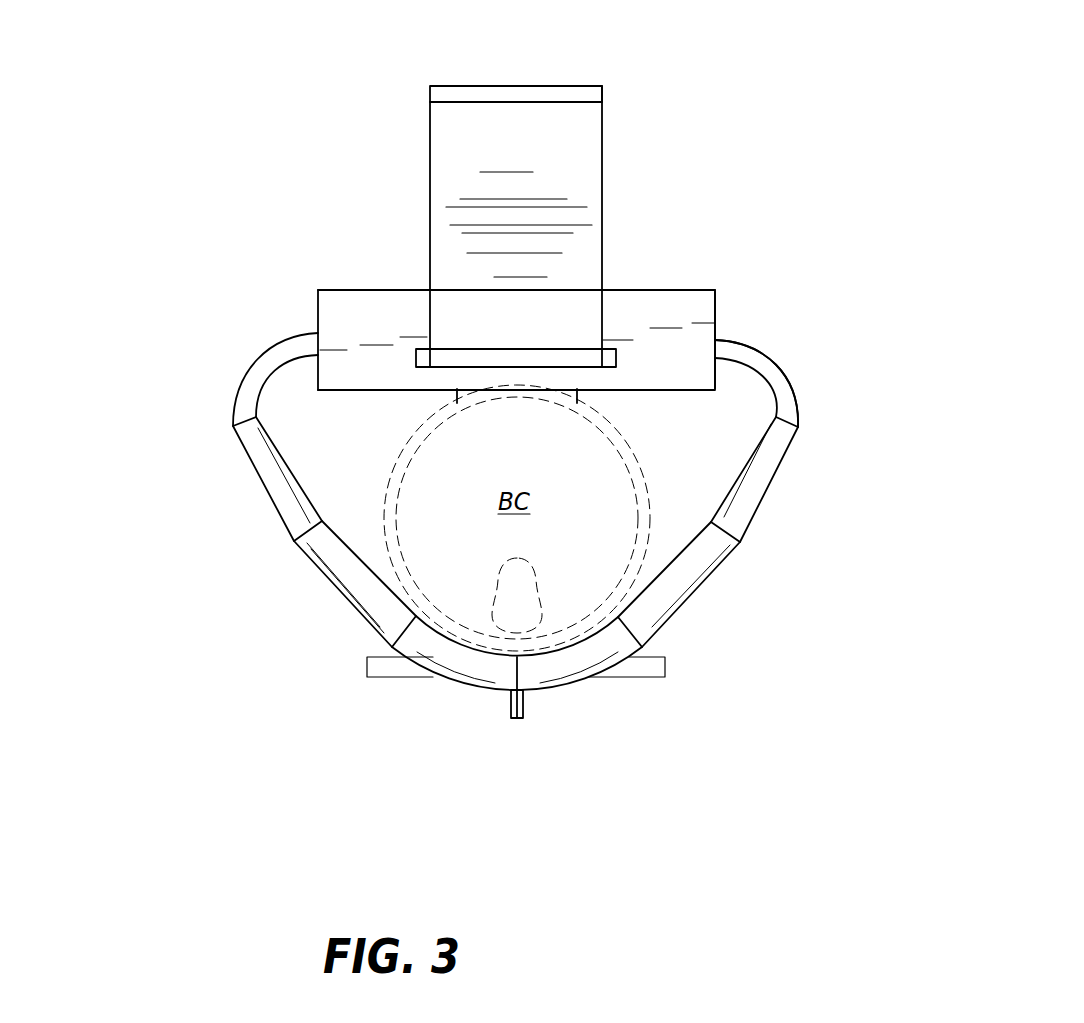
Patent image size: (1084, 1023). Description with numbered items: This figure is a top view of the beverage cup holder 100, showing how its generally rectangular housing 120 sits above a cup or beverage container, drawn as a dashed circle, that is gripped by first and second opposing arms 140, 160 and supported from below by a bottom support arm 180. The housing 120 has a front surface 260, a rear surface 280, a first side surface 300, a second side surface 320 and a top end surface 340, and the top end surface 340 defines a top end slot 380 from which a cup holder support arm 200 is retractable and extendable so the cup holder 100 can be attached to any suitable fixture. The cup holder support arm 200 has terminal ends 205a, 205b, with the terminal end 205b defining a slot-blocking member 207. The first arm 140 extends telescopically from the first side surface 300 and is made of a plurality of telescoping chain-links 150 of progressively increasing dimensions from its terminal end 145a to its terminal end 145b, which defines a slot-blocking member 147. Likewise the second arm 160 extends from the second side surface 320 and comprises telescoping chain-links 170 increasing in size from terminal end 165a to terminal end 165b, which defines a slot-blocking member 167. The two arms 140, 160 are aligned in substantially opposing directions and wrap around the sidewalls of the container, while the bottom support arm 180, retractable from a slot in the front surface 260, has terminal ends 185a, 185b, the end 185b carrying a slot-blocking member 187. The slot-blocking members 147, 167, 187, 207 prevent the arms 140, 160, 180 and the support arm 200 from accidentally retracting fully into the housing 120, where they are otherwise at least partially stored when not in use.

The beverage cup holder 100 is at (757, 702).
The housing 120 is at (332, 333).
The first opposing arm 140 is at (310, 563).
The terminal end of first arm 145a is at (243, 383).
The terminal end of first arm 145b is at (493, 680).
The slot-blocking member 147 is at (510, 705).
The telescoping chain-links 150 is at (357, 598).
The second opposing arm 160 is at (710, 577).
The terminal end of second arm 165a is at (785, 375).
The terminal end of second arm 165b is at (545, 685).
The slot-blocking member 167 is at (525, 705).
The telescoping chain-links 170 is at (758, 485).
The bottom support arm 180 is at (457, 393).
The terminal end of bottom support arm 185a is at (577, 392).
The terminal end of bottom support arm 185b is at (387, 665).
The slot-blocking member 187 is at (650, 670).
The cup holder support arm 200 is at (463, 143).
The terminal end of cup holder support arm 205a is at (545, 349).
The terminal end of cup holder support arm 205b is at (606, 96).
The slot-blocking member 207 is at (517, 93).
The front surface 260 is at (363, 392).
The rear surface 280 is at (657, 290).
The first side surface 300 is at (320, 318).
The second side surface 320 is at (715, 317).
The top end surface 340 is at (382, 315).
The top end slot 380 is at (606, 350).